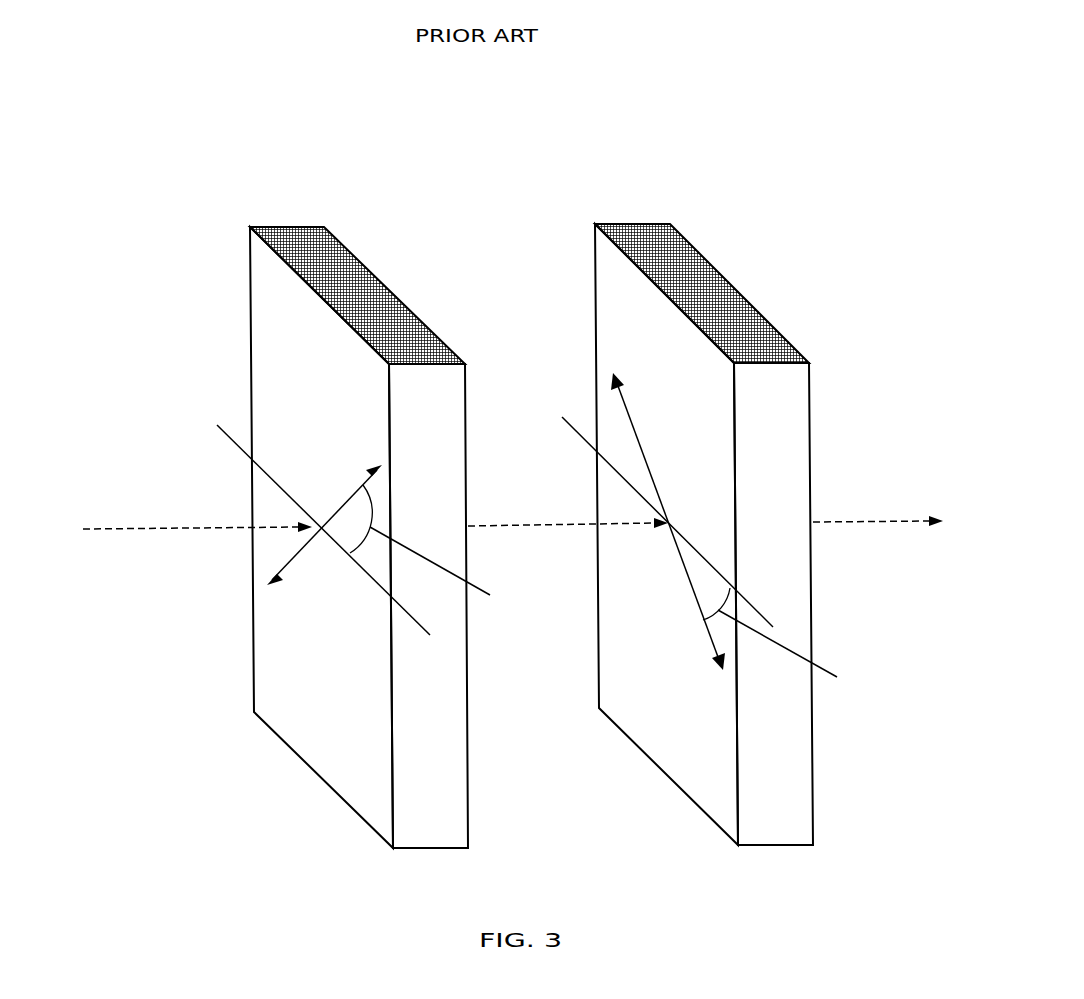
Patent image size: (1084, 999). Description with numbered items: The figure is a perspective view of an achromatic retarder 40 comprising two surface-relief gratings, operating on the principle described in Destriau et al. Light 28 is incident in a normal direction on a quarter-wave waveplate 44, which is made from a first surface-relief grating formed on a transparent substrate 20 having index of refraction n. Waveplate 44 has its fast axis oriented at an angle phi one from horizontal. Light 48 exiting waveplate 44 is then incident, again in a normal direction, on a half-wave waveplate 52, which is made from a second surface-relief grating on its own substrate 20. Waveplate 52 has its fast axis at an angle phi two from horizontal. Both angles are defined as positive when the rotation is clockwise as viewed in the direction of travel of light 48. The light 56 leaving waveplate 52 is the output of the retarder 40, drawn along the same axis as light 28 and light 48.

The achromatic retarder 40 is at (452, 165).
The quarter-wave waveplate 44 is at (223, 323).
The half-wave waveplate 52 is at (582, 320).
The substrate 20 is at (448, 723).
The light 28 is at (197, 510).
The light 48 is at (568, 506).
The output light beam 56 is at (878, 504).